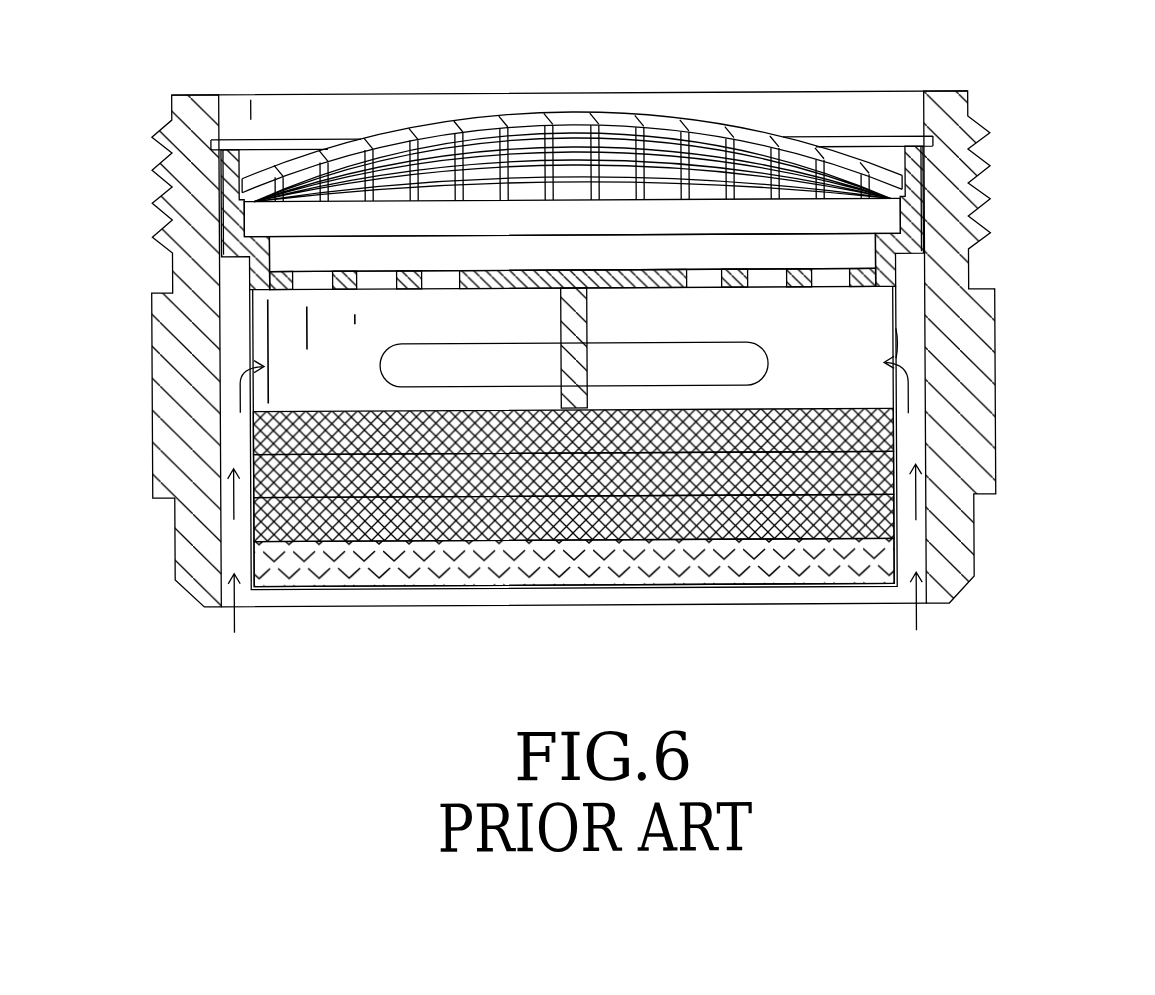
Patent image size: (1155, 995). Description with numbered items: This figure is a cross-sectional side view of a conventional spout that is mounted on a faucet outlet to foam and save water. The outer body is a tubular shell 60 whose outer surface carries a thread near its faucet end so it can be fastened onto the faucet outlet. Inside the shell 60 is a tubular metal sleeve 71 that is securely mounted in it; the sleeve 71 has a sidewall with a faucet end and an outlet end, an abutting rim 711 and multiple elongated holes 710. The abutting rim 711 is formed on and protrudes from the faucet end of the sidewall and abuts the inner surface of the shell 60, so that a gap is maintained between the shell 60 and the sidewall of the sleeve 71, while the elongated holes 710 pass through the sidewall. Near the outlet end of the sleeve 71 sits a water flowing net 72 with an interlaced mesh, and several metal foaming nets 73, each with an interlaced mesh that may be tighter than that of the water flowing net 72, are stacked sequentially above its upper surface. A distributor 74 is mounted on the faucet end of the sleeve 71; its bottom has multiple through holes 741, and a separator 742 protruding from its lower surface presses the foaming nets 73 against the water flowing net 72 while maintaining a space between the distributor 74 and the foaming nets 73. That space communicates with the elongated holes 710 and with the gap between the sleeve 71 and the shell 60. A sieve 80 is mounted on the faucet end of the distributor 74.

The shell 60 is at (1002, 449).
The sleeve 71 is at (896, 317).
The elongated holes 710 is at (898, 349).
The abutting rim 711 is at (927, 199).
The water flowing net 72 is at (335, 576).
The foaming nets 73 is at (268, 430).
The distributor 74 is at (267, 289).
The through holes 741 is at (710, 290).
The separator 742 is at (567, 313).
The sieve 80 is at (720, 127).